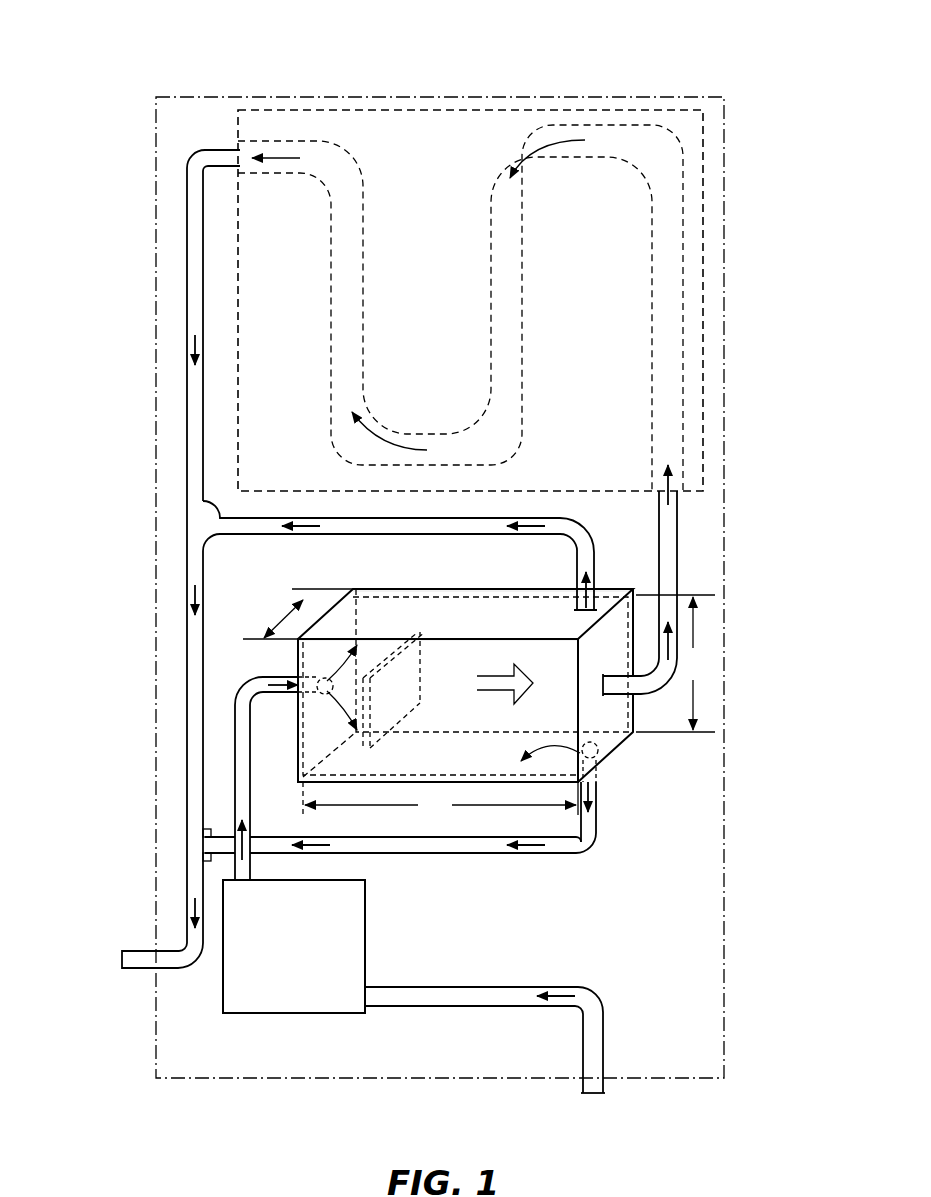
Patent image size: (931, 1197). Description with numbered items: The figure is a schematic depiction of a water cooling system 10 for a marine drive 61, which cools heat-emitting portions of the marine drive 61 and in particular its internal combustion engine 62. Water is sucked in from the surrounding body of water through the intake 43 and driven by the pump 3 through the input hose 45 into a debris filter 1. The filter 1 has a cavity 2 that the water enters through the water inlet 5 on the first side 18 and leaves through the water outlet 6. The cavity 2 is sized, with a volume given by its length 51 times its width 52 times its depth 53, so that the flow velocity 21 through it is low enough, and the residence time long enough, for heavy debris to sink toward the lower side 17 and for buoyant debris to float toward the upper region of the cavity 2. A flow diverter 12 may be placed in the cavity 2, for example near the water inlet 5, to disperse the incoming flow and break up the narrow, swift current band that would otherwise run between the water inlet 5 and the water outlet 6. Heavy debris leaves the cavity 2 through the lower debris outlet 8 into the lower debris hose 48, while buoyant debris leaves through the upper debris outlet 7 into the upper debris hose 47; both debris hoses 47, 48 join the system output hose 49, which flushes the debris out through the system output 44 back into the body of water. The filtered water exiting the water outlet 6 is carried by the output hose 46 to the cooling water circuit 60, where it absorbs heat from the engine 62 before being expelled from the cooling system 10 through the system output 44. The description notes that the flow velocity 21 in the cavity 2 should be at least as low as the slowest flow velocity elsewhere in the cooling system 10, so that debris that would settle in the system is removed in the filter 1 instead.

The water cooling system 10 is at (651, 61).
The marine drive 61 is at (729, 121).
The internal combustion engine 62 is at (714, 216).
The cooling water circuit 60 is at (678, 162).
The system output hose 49 is at (192, 405).
The system output 44 is at (132, 960).
The upper debris hose 47 is at (397, 530).
The upper debris outlet 7 is at (578, 612).
The output hose 46 is at (668, 540).
The water outlet 6 is at (605, 678).
The filter 1 is at (630, 740).
The first side 18 is at (445, 610).
The cavity 2 is at (443, 663).
The flow diverter 12 is at (410, 676).
The flow velocity 21 is at (505, 677).
The water inlet 5 is at (320, 694).
The lower debris outlet 8 is at (599, 754).
The lower side 17 is at (583, 762).
The lower debris hose 48 is at (478, 855).
The input hose 45 is at (240, 720).
The pump 3 is at (366, 925).
The intake 43 is at (593, 1095).
The depth 53 is at (287, 614).
The width 52 is at (675, 663).
The length 51 is at (440, 800).